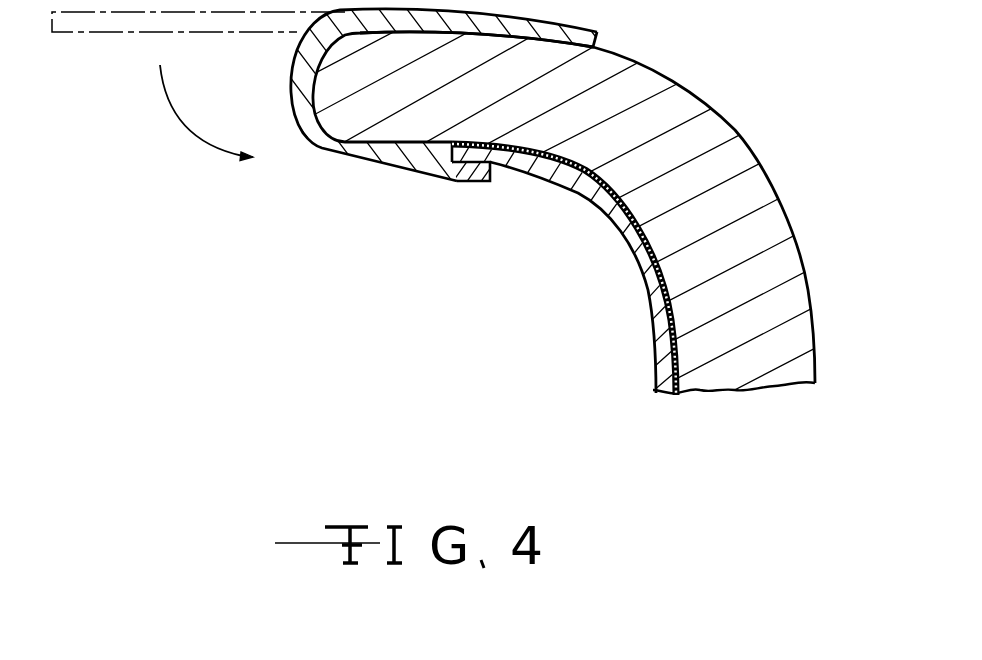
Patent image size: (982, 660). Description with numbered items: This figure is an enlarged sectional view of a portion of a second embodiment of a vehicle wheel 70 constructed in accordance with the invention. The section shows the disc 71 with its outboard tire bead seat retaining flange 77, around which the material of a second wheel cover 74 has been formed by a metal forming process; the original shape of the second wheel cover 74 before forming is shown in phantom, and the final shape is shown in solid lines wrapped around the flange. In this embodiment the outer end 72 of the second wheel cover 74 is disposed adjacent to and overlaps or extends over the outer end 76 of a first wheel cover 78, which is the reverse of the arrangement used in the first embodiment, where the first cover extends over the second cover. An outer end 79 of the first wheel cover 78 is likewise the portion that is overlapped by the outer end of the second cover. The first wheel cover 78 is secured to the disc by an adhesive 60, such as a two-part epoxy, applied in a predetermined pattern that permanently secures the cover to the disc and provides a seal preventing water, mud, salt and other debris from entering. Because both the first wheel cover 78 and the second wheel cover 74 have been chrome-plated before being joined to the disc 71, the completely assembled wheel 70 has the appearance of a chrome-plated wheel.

The adhesive 60 is at (676, 392).
The vehicle wheel 70 is at (436, 329).
The disc 71 is at (830, 335).
The outer end of second wheel cover 72 is at (98, 13).
The second wheel cover 74 is at (314, 160).
The outer end of first wheel cover 76 is at (495, 140).
The outboard tire bead seat retaining flange 77 is at (767, 227).
The first wheel cover 78 is at (641, 307).
The outer end of first wheel cover 79 is at (438, 165).